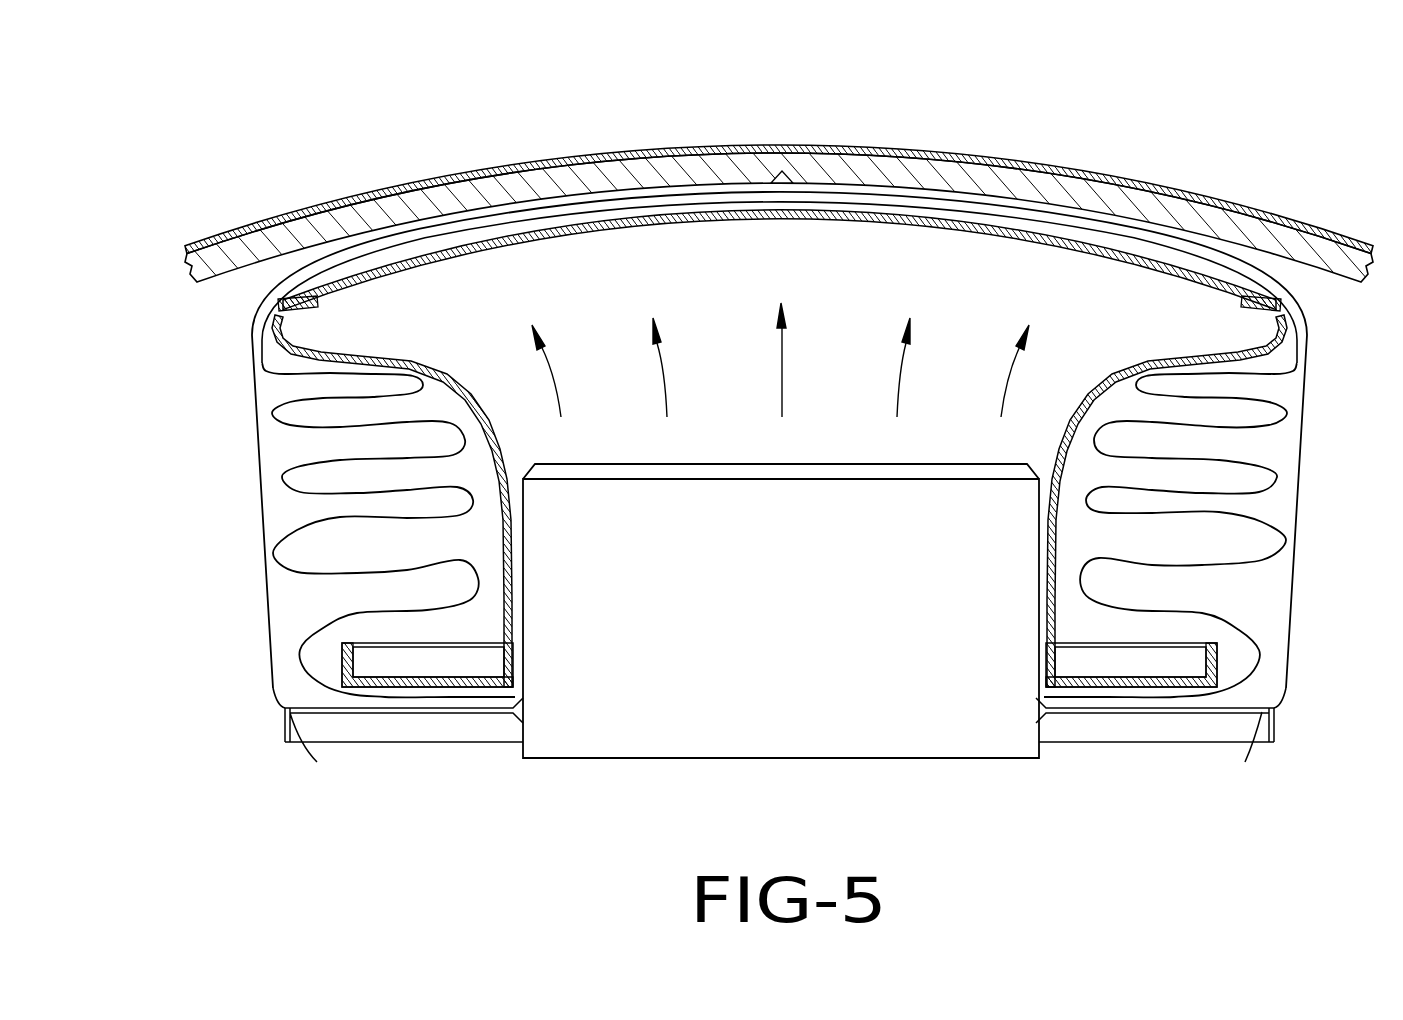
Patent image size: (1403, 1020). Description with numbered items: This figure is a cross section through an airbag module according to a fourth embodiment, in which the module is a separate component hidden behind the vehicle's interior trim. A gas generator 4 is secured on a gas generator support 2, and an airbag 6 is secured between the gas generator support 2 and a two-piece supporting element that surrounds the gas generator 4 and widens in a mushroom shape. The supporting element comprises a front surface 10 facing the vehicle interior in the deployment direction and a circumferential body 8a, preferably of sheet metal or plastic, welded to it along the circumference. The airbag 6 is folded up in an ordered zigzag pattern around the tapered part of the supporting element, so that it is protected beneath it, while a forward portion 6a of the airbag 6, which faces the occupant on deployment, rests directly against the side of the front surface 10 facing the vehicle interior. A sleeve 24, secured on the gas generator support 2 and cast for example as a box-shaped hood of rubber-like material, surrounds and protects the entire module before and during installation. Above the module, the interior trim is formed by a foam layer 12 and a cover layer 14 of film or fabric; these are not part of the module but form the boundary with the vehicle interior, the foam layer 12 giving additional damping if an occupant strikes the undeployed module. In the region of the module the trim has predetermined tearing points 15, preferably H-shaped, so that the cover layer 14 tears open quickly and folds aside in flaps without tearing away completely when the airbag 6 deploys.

The gas generator support 2 is at (1175, 712).
The gas generator 4 is at (907, 733).
The airbag 6 is at (292, 533).
The forward portion of the airbag 6a is at (318, 275).
The circumferential body 8a is at (1197, 353).
The front surface 10 is at (935, 220).
The foam layer 12 is at (427, 203).
The cover layer 14 is at (557, 158).
The predetermined tearing points 15 is at (788, 180).
The sleeve 24 is at (1298, 568).